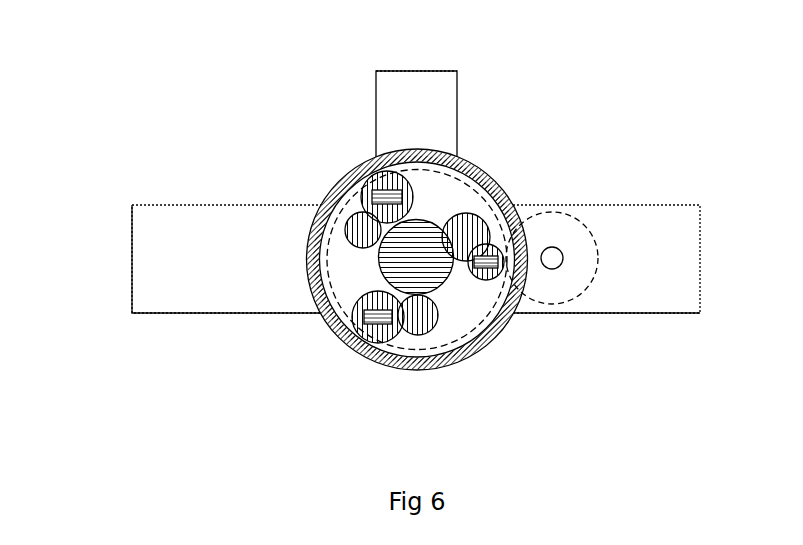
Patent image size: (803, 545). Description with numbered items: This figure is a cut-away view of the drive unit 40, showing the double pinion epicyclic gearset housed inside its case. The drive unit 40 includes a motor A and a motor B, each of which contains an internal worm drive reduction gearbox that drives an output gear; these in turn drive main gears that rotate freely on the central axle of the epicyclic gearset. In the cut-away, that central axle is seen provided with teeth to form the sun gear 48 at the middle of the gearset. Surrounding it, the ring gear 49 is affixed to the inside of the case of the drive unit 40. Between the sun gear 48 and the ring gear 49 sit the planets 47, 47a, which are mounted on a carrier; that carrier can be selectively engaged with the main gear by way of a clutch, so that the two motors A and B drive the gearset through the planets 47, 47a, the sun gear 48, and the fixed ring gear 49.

The drive unit 40 is at (610, 75).
The planet 47 is at (360, 177).
The planet 47a is at (355, 232).
The sun gear 48 is at (440, 280).
The ring gear 49 is at (473, 165).
The motor A is at (157, 305).
The motor B is at (685, 305).